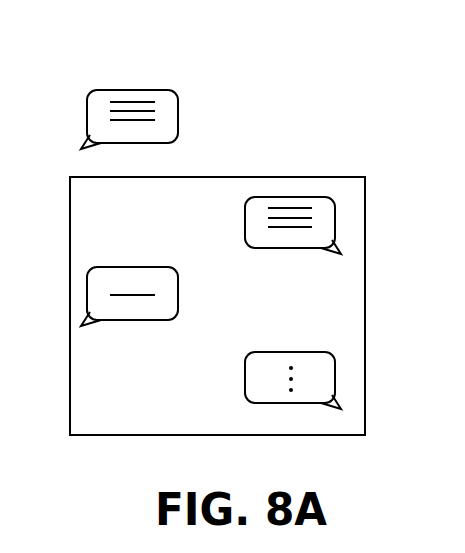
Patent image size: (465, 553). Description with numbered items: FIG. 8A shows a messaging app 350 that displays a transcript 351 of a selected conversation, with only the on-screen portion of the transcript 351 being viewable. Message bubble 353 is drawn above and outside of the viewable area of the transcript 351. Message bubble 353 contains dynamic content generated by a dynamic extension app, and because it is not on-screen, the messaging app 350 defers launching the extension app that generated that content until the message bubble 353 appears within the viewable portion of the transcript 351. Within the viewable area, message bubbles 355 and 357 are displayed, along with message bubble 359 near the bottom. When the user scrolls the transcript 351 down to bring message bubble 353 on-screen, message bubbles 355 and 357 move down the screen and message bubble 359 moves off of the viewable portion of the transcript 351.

The messaging app 350 is at (308, 104).
The transcript 351 is at (308, 177).
The message bubble 353 is at (178, 112).
The message bubble 355 is at (335, 220).
The message bubble 357 is at (87, 288).
The message bubble 359 is at (335, 377).